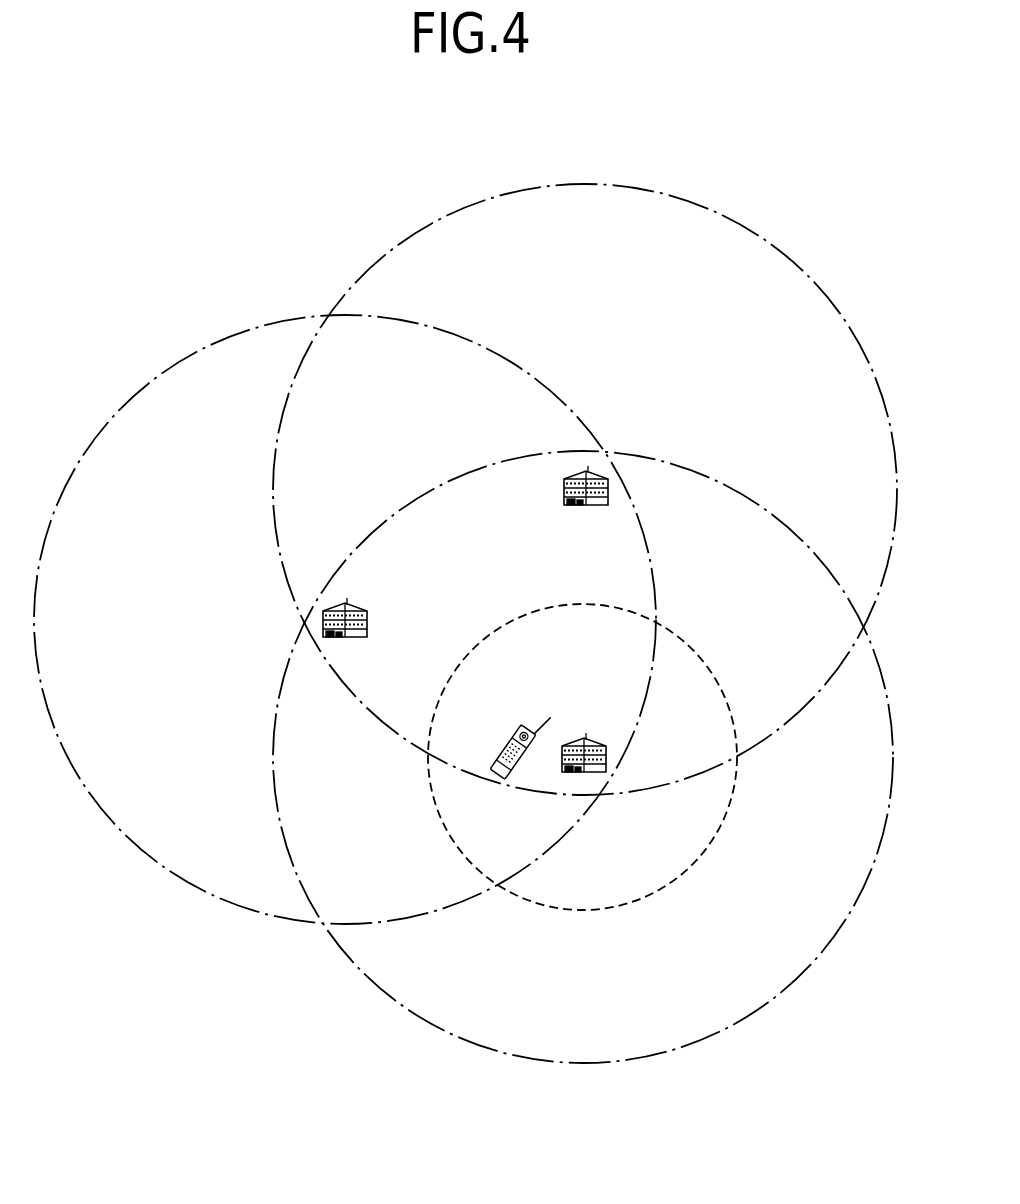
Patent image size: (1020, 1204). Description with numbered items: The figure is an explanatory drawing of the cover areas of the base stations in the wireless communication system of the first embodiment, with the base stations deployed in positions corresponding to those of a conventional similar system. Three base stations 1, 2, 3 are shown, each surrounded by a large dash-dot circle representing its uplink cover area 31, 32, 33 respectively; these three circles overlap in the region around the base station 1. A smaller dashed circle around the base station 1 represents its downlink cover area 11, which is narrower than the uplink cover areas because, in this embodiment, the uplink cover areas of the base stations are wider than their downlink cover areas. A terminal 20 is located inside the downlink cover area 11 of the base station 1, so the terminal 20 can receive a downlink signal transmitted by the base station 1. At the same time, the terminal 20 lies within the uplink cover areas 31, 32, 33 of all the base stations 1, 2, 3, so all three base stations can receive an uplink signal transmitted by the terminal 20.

The base station 1 is at (572, 739).
The base station 2 is at (564, 500).
The base station 3 is at (368, 622).
The downlink cover area 11 is at (725, 698).
The terminal 20 is at (526, 733).
The uplink cover area 31 is at (773, 998).
The uplink cover area 32 is at (785, 254).
The uplink cover area 33 is at (205, 346).